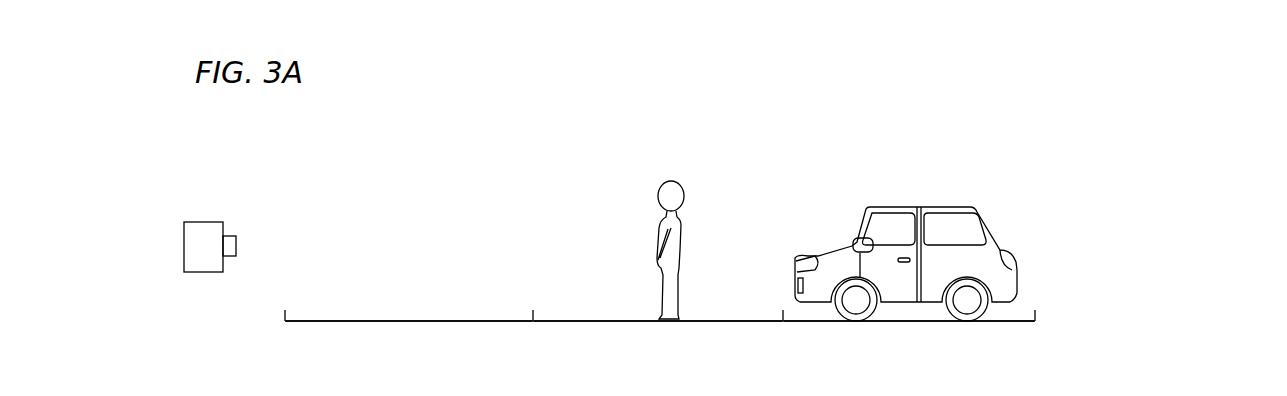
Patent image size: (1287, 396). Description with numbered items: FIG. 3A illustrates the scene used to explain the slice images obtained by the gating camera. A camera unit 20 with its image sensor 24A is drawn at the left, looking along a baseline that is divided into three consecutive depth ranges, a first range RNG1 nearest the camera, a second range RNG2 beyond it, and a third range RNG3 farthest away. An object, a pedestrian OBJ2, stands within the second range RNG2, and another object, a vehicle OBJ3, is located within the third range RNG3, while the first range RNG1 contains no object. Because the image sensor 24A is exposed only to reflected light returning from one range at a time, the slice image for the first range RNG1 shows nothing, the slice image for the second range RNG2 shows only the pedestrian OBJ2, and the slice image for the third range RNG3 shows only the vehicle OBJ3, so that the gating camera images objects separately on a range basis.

The imaging device / camera 20 is at (249, 216).
The image sensor 24A is at (207, 221).
The object (pedestrian) OBJ2 is at (681, 183).
The object (vehicle) OBJ3 is at (932, 204).
The range RNG1 is at (409, 345).
The range RNG2 is at (658, 346).
The range RNG3 is at (909, 346).